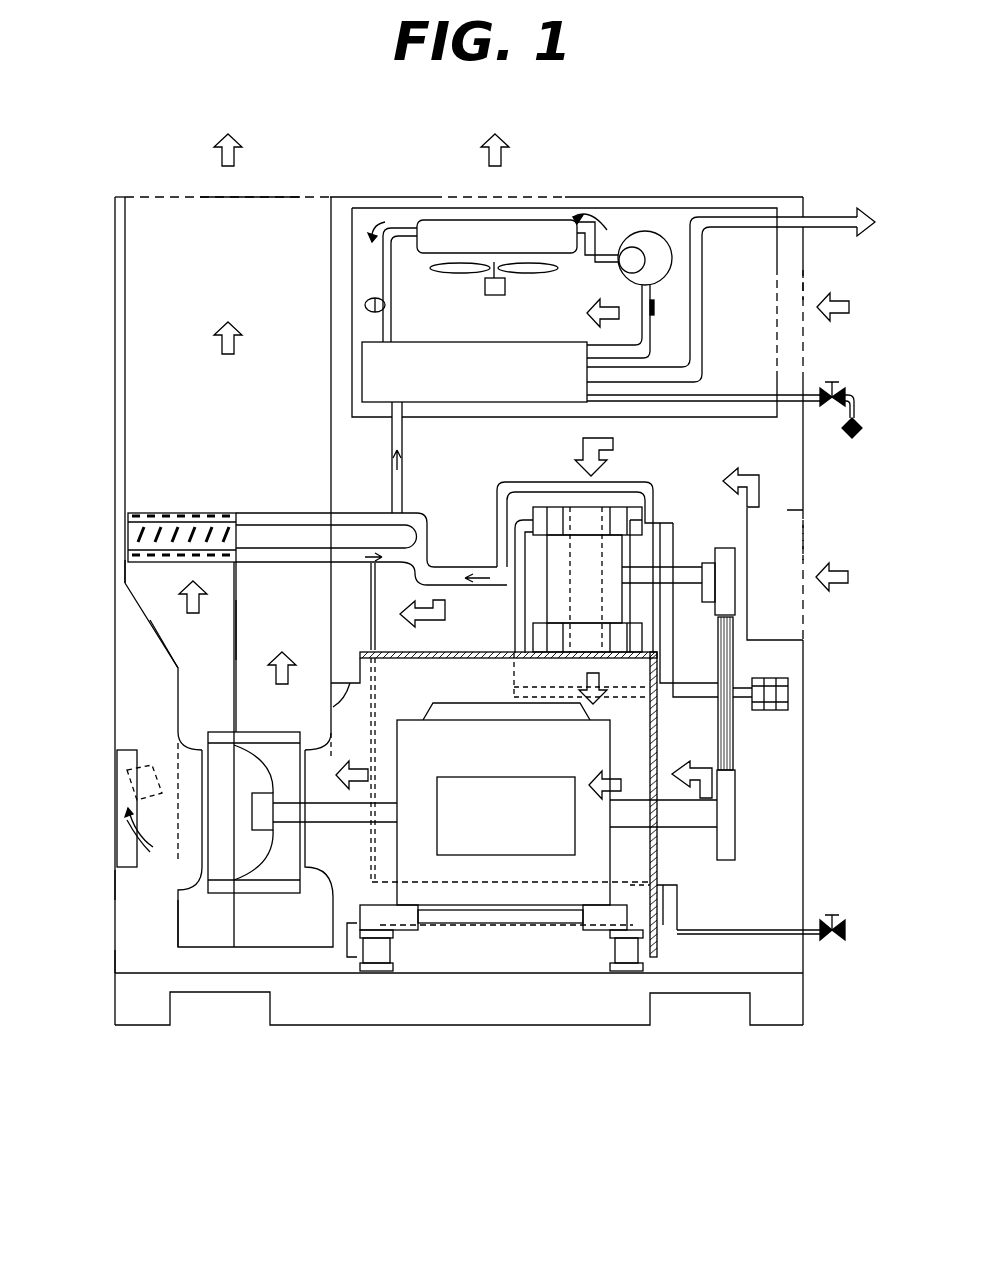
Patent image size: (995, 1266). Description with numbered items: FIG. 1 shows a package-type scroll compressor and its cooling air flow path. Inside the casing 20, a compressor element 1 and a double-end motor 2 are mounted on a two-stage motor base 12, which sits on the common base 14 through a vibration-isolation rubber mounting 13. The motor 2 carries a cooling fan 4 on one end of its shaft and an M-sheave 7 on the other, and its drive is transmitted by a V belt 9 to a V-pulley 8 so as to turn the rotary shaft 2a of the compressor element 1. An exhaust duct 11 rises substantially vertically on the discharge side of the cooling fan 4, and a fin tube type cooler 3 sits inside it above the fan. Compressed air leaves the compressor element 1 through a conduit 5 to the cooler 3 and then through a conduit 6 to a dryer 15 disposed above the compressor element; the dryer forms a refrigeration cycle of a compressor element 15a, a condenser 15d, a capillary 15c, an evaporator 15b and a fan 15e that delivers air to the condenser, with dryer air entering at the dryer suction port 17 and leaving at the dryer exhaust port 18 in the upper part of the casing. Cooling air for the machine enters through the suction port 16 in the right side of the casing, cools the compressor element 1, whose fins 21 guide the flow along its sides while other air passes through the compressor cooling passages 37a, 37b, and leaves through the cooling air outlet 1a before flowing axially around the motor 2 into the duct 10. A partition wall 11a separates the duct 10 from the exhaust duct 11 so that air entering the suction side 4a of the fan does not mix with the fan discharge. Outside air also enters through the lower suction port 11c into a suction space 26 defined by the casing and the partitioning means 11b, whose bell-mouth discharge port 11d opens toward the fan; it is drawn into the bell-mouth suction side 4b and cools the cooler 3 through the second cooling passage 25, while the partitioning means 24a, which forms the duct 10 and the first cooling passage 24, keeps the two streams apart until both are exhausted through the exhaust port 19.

The compressor element 1 is at (582, 548).
The cooling air outlet 1a is at (585, 668).
The double-end motor 2 is at (598, 875).
The rotary shaft 2a is at (688, 578).
The fin tube type cooler 3 is at (155, 525).
The cooling fan 4 is at (260, 893).
The suction side 4a is at (327, 857).
The suction side 4b is at (188, 852).
The conduit 5 is at (400, 578).
The conduit 6 is at (395, 490).
The M-sheave 7 is at (730, 790).
The V-pulley 8 is at (730, 590).
The belt 9 is at (735, 722).
The duct 10 is at (345, 700).
The exhaust duct 11 is at (122, 278).
The partition wall 11a is at (333, 907).
The partitioning means 11b is at (170, 908).
The suction port 11c is at (125, 768).
The discharge port 11d is at (200, 865).
The motor base 12 is at (548, 925).
The vibration-isolation rubber mounting 13 is at (385, 950).
The common base 14 is at (478, 1000).
The dryer 15 is at (590, 292).
The compressor element 15a is at (655, 248).
The evaporator 15b is at (495, 348).
The capillary 15c is at (372, 298).
The condenser 15d is at (440, 238).
The fan 15e is at (540, 266).
The suction port 16 is at (805, 548).
The dryer suction port 17 is at (805, 282).
The dryer exhaust port 18 is at (518, 197).
The exhaust port 19 is at (248, 197).
The casing 20 is at (790, 200).
The fins 21 is at (553, 520).
The first cooling passage 24 is at (258, 645).
The partitioning means 24a is at (230, 632).
The second cooling passage 25 is at (145, 600).
The suction space 26 is at (147, 883).
The compressor cooling passage 37a is at (588, 520).
The compressor cooling passage 37b is at (585, 638).